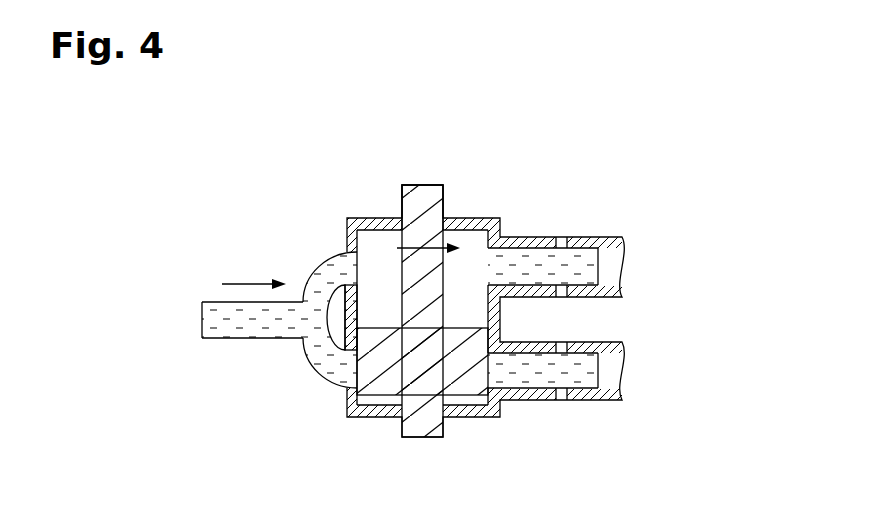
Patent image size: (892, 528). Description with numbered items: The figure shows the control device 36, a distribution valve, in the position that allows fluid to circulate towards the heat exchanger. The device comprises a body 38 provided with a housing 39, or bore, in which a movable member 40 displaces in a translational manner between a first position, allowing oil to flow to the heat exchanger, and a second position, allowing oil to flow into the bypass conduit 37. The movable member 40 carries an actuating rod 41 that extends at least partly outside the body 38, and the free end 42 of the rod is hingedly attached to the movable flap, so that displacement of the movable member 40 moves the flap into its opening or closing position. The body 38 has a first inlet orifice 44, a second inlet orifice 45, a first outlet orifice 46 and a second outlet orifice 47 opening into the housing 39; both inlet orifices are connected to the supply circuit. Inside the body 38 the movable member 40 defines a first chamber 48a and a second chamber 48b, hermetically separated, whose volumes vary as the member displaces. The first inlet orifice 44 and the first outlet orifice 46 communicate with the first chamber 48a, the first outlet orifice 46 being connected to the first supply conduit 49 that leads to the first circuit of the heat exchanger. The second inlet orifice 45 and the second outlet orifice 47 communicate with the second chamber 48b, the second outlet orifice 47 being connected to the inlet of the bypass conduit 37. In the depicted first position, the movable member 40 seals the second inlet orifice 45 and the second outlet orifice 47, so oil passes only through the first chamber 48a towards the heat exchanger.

The control device 36 is at (634, 200).
The bypass conduit 37 is at (585, 390).
The body 38 is at (478, 413).
The housing 39 is at (473, 248).
The movable member 40 is at (375, 362).
The actuating rod 41 is at (420, 213).
The free end 42 is at (420, 185).
The first inlet orifice 44 is at (352, 263).
The second inlet orifice 45 is at (335, 375).
The first outlet orifice 46 is at (531, 262).
The second outlet orifice 47 is at (533, 385).
The first chamber 48a is at (463, 305).
The second chamber 48b is at (458, 402).
The first supply conduit 49 is at (607, 237).